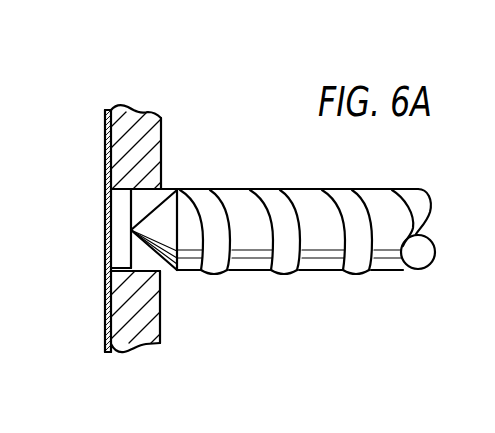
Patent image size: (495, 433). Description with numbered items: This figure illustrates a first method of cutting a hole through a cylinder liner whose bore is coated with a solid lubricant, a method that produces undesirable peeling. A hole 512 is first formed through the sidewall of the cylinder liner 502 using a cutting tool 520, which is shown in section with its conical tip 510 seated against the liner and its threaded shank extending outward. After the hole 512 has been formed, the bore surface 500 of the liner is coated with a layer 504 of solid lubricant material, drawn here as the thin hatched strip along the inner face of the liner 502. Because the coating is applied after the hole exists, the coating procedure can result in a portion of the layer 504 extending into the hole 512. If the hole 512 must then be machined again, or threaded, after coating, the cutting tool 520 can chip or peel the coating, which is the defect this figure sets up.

The bore surface 500 is at (112, 336).
The cylinder liner 502 is at (154, 117).
The layer of solid lubricant material 504 is at (105, 142).
The conical screw head 510 is at (150, 197).
The hole 512 is at (126, 192).
The cutting tool 520 is at (373, 189).